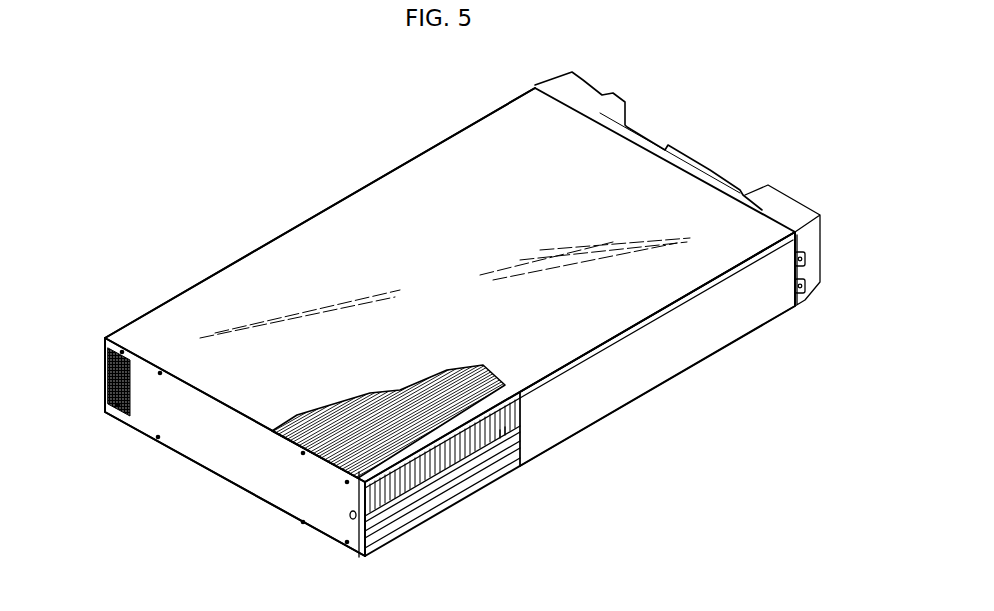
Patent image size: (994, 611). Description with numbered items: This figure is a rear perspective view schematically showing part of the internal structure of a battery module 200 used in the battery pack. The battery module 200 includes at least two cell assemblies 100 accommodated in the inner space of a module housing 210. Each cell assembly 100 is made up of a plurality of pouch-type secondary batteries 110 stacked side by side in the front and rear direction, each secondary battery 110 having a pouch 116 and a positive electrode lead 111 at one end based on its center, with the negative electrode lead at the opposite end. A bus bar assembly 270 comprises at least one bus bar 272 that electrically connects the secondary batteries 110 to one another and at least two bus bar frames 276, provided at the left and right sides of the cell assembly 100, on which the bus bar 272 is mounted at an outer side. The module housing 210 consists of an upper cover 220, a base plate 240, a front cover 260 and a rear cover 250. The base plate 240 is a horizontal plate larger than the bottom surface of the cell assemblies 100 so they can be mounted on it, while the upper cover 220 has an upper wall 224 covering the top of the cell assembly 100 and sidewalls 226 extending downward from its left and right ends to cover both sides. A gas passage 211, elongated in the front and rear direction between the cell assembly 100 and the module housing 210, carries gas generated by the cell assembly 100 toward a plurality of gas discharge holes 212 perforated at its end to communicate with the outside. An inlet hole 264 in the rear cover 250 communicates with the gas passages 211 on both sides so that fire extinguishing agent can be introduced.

The battery module 200 is at (198, 124).
The module housing 210 is at (314, 205).
The sidewall 226 is at (187, 281).
The upper wall 224 is at (557, 345).
The upper cover 220 is at (712, 380).
The gas discharge holes 212 is at (107, 381).
The rear cover 250 is at (220, 452).
The inlet hole 264 is at (343, 518).
The front cover 260 is at (712, 172).
The cell assembly 100 is at (384, 388).
The pouch 116 is at (350, 408).
The secondary battery 110 is at (297, 420).
The gas passage 211 is at (466, 442).
The positive electrode lead 111 is at (378, 490).
The base plate 240 is at (418, 522).
The bus bar assembly 270 is at (566, 462).
The bus bar frame 276 is at (490, 410).
The bus bar 272 is at (490, 447).